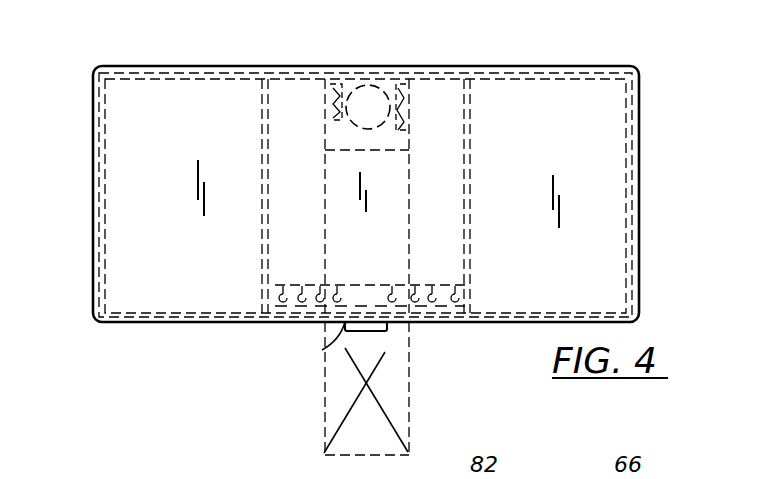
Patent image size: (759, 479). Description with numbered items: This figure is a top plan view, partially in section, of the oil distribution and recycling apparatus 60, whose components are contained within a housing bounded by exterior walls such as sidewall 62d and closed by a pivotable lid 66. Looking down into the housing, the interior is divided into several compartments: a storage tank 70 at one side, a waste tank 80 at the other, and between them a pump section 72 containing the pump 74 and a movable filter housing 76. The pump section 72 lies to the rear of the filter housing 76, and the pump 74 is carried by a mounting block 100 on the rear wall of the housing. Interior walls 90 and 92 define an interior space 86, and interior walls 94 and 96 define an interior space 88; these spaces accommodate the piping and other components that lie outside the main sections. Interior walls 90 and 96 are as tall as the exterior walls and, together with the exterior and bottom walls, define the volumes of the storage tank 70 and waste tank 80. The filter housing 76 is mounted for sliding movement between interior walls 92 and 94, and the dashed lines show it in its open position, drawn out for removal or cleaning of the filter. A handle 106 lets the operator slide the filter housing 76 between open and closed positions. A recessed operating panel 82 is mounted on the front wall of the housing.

The oil distribution and recycling apparatus 60 is at (648, 126).
The sidewall 62d is at (567, 66).
The pivotable lid 66 is at (640, 175).
The tank 70 is at (225, 141).
The pump section 72 is at (400, 134).
The pump 74 is at (360, 86).
The filter housing 76 is at (390, 263).
The waste tank 80 is at (590, 141).
The recessed operating panel 82 is at (442, 325).
The interior space 86 is at (320, 193).
The interior space 88 is at (456, 193).
The interior wall 90 is at (262, 243).
The interior wall 92 is at (325, 256).
The interior wall 94 is at (410, 258).
The interior wall 96 is at (470, 226).
The mounting block 100 is at (390, 84).
The handle 106 is at (400, 322).